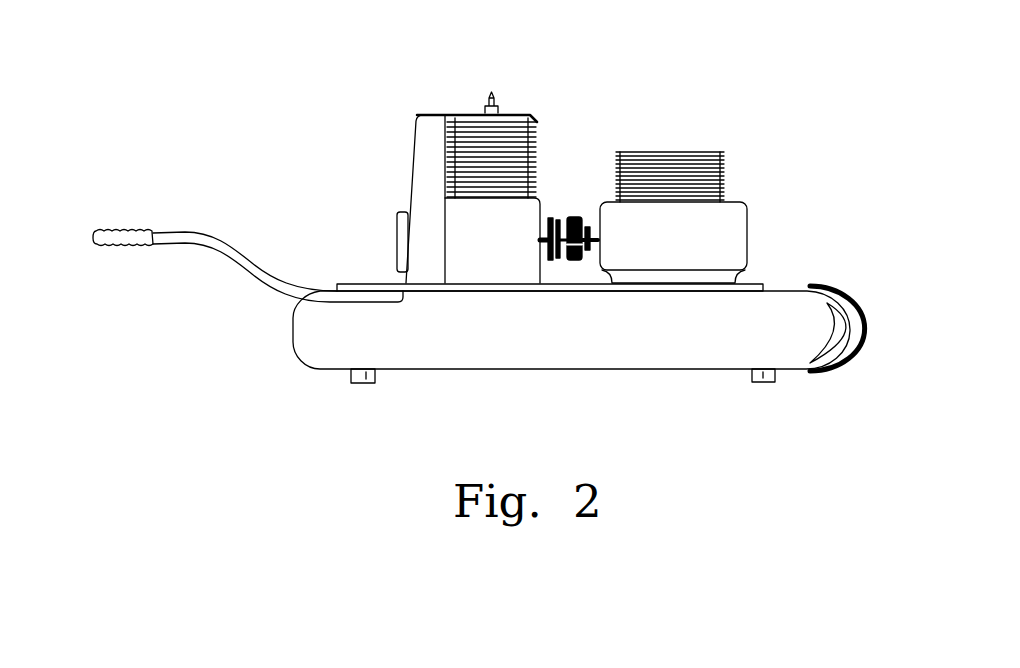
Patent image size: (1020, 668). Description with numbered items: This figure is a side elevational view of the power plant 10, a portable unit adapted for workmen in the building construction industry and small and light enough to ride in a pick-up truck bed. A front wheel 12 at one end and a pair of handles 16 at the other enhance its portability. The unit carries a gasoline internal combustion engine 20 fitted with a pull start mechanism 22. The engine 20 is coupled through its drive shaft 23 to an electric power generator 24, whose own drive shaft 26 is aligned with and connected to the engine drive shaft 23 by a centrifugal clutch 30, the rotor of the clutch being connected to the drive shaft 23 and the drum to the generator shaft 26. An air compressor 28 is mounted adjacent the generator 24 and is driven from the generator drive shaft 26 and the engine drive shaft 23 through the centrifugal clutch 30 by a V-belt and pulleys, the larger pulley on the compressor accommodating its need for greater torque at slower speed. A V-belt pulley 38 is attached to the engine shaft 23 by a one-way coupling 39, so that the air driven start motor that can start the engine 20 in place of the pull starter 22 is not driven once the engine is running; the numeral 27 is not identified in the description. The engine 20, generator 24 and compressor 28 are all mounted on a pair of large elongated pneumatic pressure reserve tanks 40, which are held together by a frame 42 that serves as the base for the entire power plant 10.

The power plant 10 is at (408, 185).
The front wheel 12 is at (860, 322).
The handles 16 is at (250, 260).
The gasoline internal combustion engine 20 is at (540, 150).
The pull start mechanism 22 is at (400, 253).
The drive shaft 23 is at (550, 258).
The electric power generator 24 is at (733, 218).
The generator drive shaft 26 is at (588, 250).
The drive plate 27 is at (570, 260).
The air compressor 28 is at (662, 153).
The centrifugal clutch 30 is at (577, 258).
The V-belt pulley 38 is at (562, 216).
The one-way coupling 39 is at (548, 220).
The pneumatic pressure reserve tanks 40 is at (695, 327).
The frame 42 is at (368, 385).